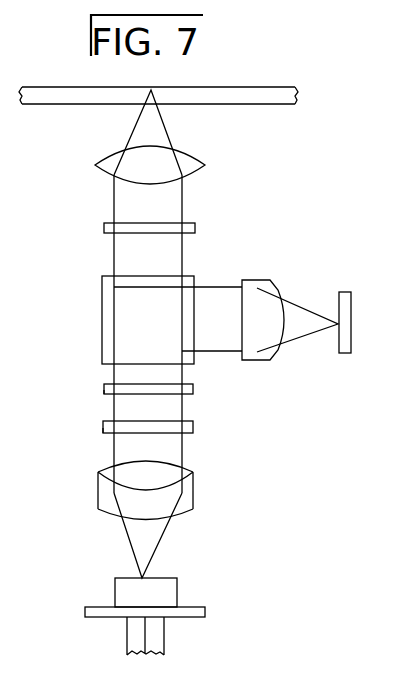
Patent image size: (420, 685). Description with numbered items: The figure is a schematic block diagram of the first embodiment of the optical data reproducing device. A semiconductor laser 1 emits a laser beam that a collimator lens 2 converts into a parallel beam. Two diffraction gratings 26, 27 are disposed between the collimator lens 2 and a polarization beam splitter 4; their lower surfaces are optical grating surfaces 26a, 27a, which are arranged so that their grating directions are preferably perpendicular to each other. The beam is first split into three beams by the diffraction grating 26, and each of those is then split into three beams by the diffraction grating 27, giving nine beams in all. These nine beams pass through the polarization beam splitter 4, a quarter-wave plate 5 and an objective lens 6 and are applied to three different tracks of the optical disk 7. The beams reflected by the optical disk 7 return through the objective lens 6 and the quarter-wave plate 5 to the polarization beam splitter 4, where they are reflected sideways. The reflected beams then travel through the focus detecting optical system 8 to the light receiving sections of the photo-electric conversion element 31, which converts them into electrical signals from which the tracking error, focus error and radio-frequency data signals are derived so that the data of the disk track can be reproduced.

The semiconductor laser 1 is at (177, 590).
The collimator lens 2 is at (194, 497).
The polarization beam splitter 4 is at (102, 323).
The quarter-wave plate 5 is at (197, 228).
The objective lens 6 is at (196, 156).
The optical disk 7 is at (250, 105).
The focus detecting optical system 8 is at (273, 280).
The diffraction grating 26 is at (194, 428).
The optical grating surface 26a is at (106, 434).
The diffraction grating 27 is at (194, 389).
The optical grating surface 27a is at (106, 395).
The photo-electric conversion element 31 is at (351, 292).